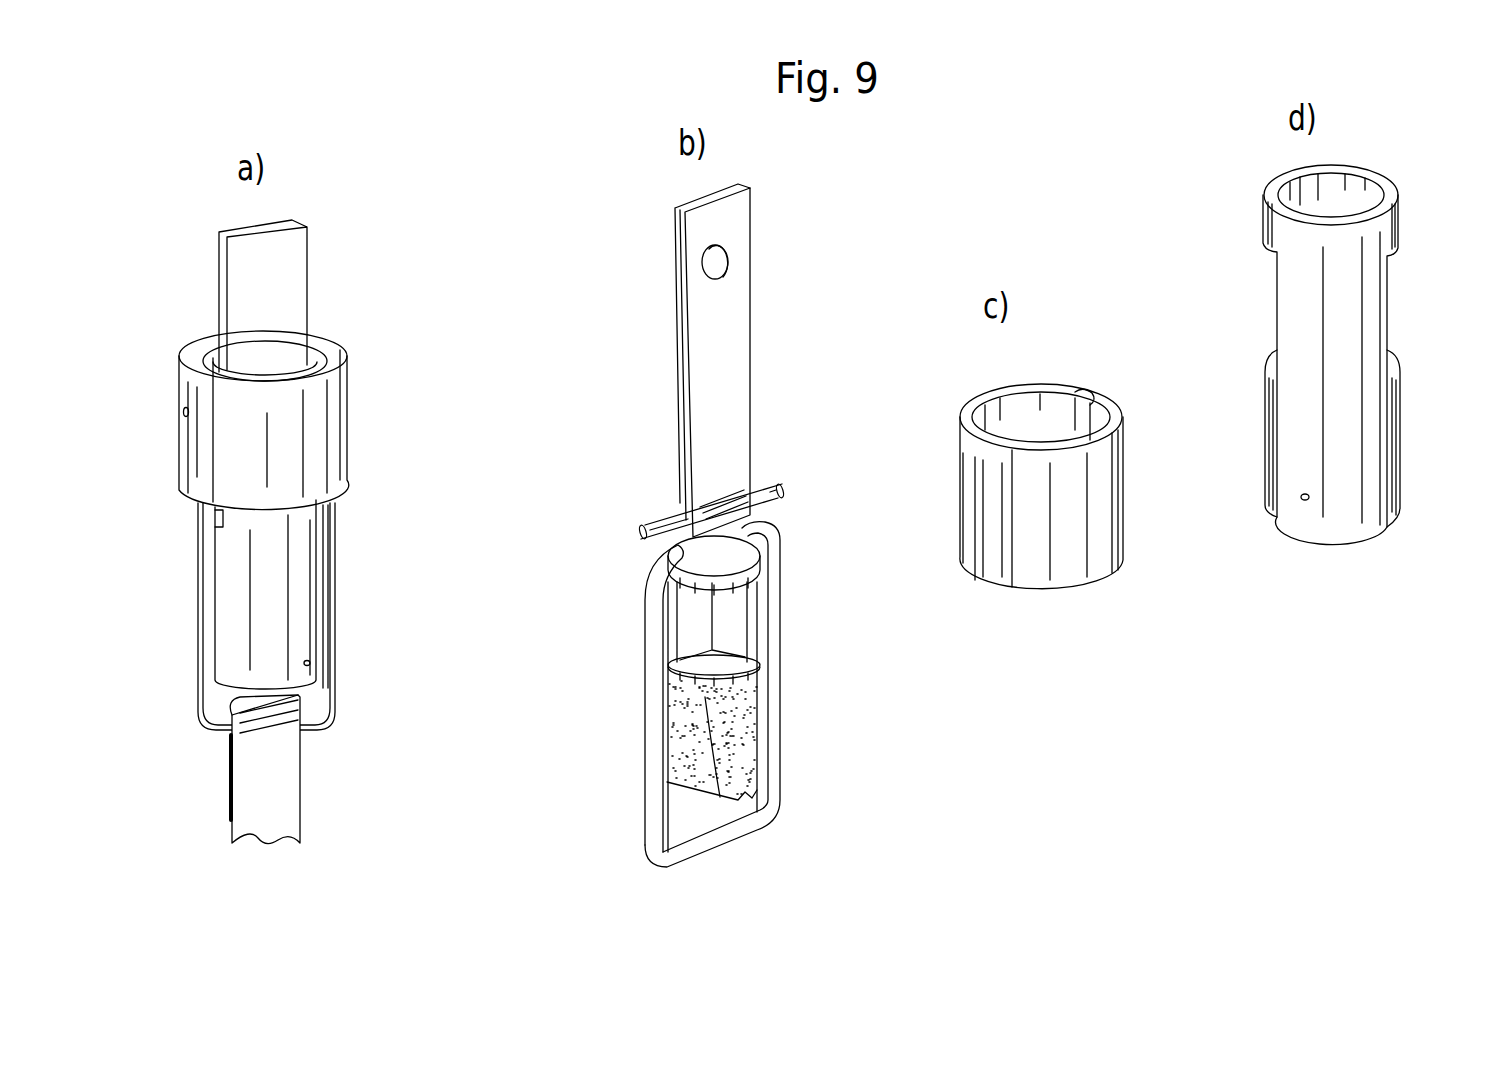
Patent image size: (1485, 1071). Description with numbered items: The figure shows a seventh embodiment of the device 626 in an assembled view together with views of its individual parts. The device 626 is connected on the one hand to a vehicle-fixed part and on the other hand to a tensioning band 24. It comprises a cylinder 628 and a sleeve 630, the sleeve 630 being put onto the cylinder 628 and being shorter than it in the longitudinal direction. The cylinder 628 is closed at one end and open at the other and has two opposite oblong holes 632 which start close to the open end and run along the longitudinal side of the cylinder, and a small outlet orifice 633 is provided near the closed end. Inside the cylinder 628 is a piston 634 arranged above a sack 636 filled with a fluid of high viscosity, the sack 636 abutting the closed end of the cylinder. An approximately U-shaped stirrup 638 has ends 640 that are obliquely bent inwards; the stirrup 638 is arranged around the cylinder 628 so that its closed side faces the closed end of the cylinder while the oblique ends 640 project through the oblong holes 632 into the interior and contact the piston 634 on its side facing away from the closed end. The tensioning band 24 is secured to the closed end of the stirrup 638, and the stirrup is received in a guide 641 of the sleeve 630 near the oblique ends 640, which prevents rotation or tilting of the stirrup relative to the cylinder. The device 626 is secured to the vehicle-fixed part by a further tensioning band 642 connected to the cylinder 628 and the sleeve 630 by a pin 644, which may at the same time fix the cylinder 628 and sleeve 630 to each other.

The tensioning band 24 is at (287, 790).
The device 626 is at (346, 282).
The cylinder 628 is at (303, 622).
The sleeve 630 is at (322, 443).
The oblong holes 632 is at (218, 516).
The outlet orifice 633 is at (311, 665).
The piston 634 is at (733, 628).
The sack 636 is at (745, 733).
The stirrup 638 is at (204, 686).
The ends 640 is at (755, 518).
The guide 641 is at (1087, 397).
The further tensioning band 642 is at (240, 272).
The pin 644 is at (186, 413).